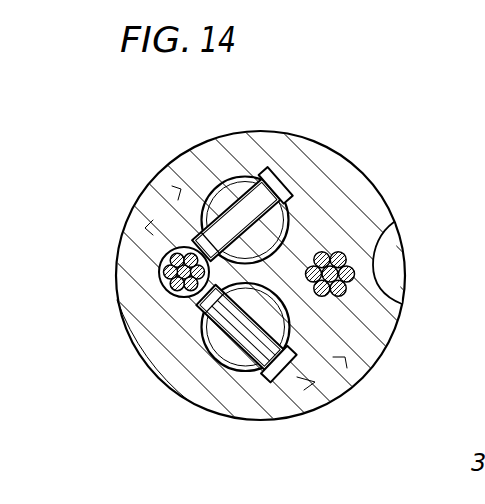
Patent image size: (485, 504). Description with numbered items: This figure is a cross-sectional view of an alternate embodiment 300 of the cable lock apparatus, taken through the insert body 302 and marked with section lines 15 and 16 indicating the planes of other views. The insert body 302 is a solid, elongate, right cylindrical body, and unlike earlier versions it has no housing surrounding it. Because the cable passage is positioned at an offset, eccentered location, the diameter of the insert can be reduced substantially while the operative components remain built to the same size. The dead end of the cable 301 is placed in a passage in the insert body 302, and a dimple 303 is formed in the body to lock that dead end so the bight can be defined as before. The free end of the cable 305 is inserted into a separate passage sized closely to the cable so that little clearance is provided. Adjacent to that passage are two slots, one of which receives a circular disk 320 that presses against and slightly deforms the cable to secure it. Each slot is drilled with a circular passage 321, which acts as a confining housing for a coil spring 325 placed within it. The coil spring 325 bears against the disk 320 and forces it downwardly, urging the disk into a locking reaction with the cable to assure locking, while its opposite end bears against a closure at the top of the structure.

The embodiment 300 is at (395, 171).
The dead end of the cable 301 is at (342, 256).
The insert body 302 is at (371, 366).
The dimple 303 is at (400, 296).
The free end of the cable 305 is at (163, 258).
The circular disk 320 is at (272, 174).
The circular passage 321 is at (232, 326).
The coil spring 325 is at (233, 177).
The section line 15 is at (112, 137).
The section line 16 is at (88, 275).